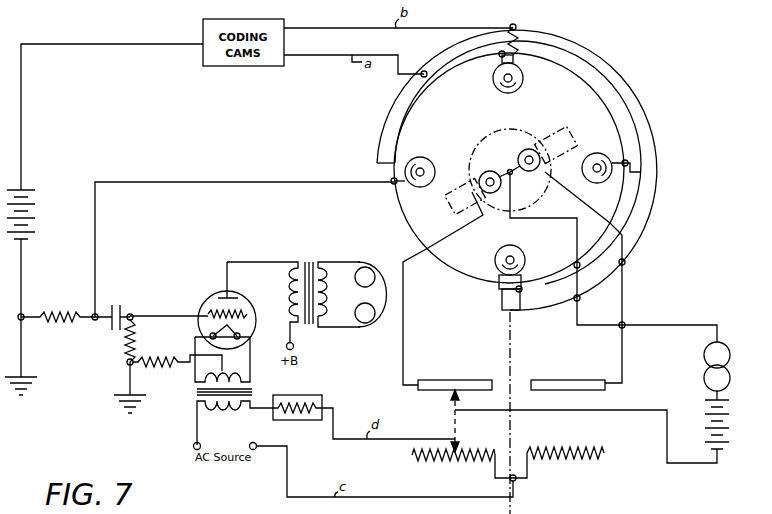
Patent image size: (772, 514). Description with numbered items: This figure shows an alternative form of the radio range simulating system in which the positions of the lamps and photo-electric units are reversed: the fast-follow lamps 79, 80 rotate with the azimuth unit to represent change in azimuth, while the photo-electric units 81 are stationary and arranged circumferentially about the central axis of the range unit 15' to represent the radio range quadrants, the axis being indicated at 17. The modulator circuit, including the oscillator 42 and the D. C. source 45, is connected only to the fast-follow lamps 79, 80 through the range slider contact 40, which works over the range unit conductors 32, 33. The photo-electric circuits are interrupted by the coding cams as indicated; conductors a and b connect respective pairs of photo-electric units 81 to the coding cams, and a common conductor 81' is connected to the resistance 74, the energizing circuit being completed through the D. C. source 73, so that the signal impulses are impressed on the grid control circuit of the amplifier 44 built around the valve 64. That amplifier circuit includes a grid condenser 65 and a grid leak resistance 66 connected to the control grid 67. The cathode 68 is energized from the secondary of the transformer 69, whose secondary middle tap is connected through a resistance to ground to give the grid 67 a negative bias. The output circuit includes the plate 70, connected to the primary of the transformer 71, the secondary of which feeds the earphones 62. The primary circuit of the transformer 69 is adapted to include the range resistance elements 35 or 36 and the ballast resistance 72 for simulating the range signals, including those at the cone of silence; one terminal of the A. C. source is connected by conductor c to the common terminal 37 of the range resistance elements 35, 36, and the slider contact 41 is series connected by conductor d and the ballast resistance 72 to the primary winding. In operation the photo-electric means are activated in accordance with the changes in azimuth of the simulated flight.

The range unit 15' is at (535, 170).
The axis center line 17 is at (520, 438).
The range unit conductor 32 is at (460, 380).
The range unit conductor 33 is at (595, 380).
The range resistance element 35 is at (446, 462).
The range resistance element 36 is at (578, 462).
The junction 37 is at (517, 482).
The slider contact 40 is at (449, 397).
The slider contact 41 is at (462, 449).
The oscillator 42 is at (704, 357).
The amplifier 44 is at (223, 233).
The D. C. source 45 is at (722, 413).
The earphones 62 is at (380, 262).
The valve 64 is at (213, 295).
The grid condenser 65 is at (113, 305).
The grid leak resistance 66 is at (136, 352).
The control grid 67 is at (247, 314).
The cathode 68 is at (240, 333).
The transformer 69 is at (192, 394).
The plate 70 is at (236, 298).
The transformer 71 is at (303, 262).
The ballast resistance 72 is at (298, 395).
The D. C. source 73 is at (28, 210).
The resistance 74 is at (78, 312).
The fast-follow lamp 79 is at (484, 172).
The fast-follow lamp 80 is at (532, 149).
The photo-electric unit 81 is at (523, 168).
The common conductor 81' is at (250, 236).